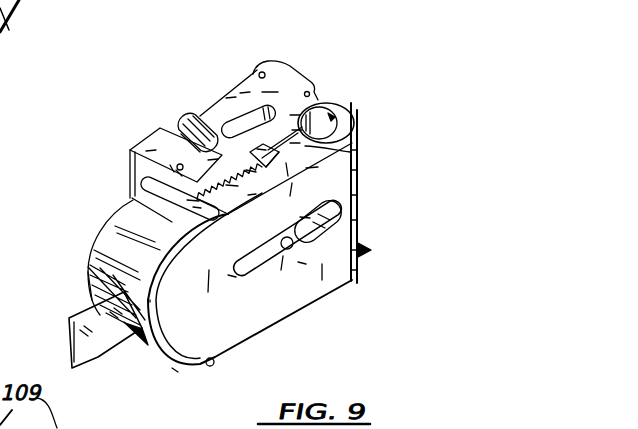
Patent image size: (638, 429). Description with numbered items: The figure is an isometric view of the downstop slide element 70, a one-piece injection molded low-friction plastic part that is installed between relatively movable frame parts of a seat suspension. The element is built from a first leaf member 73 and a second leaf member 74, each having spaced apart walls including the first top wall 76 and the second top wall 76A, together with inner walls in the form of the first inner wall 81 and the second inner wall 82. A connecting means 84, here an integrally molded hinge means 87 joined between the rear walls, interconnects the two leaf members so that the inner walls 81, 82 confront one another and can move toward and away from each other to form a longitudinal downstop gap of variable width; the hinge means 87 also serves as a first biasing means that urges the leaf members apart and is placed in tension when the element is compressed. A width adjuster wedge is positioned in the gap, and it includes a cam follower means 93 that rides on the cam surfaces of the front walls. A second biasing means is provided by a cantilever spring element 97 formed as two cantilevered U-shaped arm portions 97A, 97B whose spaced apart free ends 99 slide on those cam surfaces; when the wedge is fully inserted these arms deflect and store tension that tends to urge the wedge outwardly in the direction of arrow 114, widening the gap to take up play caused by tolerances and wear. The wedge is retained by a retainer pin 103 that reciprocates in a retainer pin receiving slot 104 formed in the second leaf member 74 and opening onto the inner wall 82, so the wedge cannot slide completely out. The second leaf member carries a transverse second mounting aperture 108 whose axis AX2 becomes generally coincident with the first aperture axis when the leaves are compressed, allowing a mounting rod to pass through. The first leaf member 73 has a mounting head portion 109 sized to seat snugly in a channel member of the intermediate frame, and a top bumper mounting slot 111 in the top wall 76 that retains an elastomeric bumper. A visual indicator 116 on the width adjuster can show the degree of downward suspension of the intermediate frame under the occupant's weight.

The downstop slide element 70 is at (302, 10).
The first leaf member 73 is at (170, 153).
The second leaf member 74 is at (217, 318).
The first top wall 76 is at (232, 140).
The second top wall 76A is at (350, 152).
The first inner wall 81 is at (218, 172).
The second inner wall 82 is at (280, 160).
The connecting means 84 is at (328, 97).
The integral hinge means 87 is at (349, 106).
The cam follower means 93 is at (103, 234).
The cantilever spring element 97 is at (85, 291).
The first U-shaped arm portion 97A is at (135, 206).
The second U-shaped arm portion 97B is at (173, 371).
The free ends 99 is at (177, 170).
The retainer pin 103 is at (292, 250).
The retainer pin receiving slot 104 is at (272, 258).
The second mounting aperture 108 is at (353, 210).
The mounting head portion 109 is at (292, 68).
The top bumper mounting slot 111 is at (164, 130).
The arrow 114 is at (135, 348).
The visual indicator 116 is at (73, 338).
The second axis AX2 is at (360, 262).